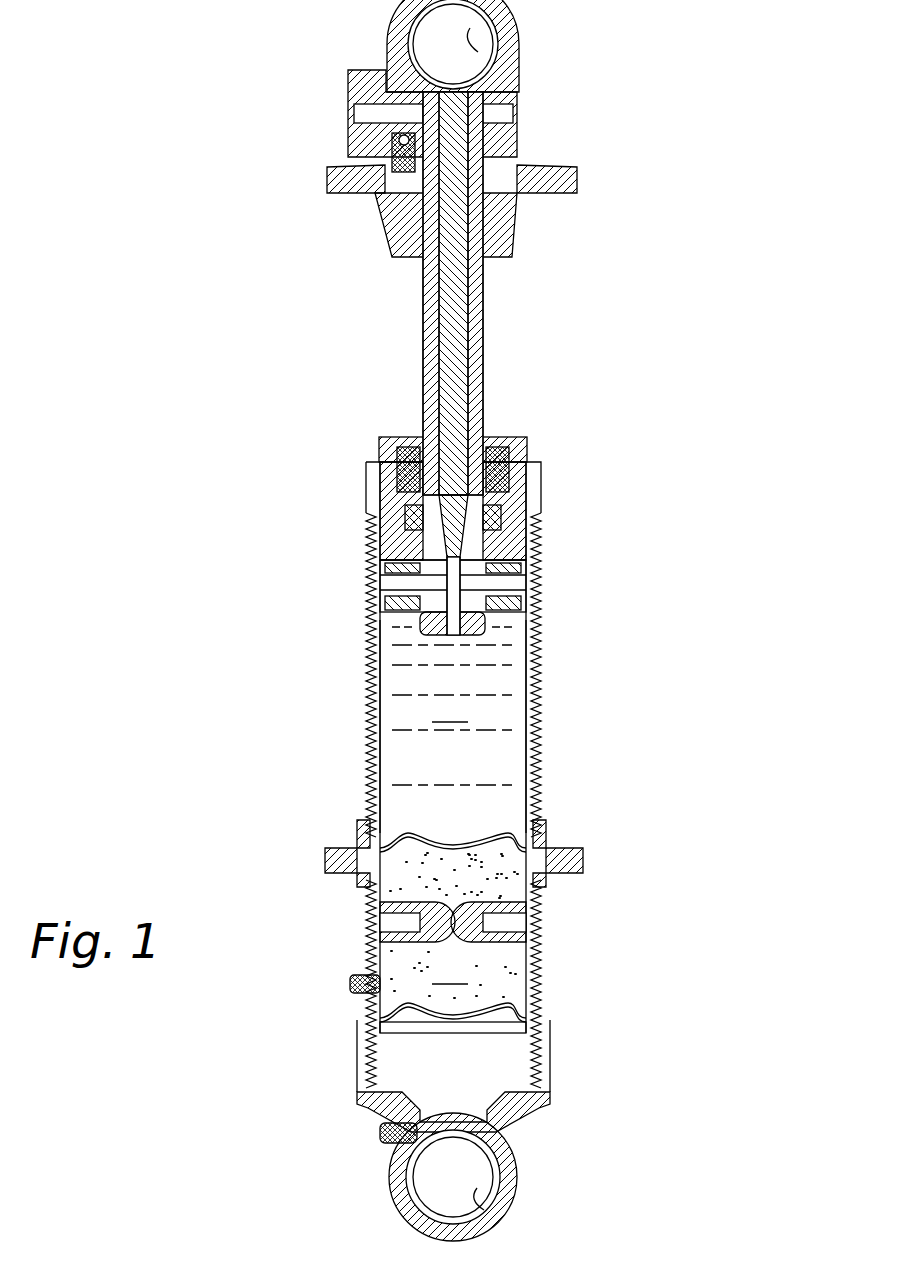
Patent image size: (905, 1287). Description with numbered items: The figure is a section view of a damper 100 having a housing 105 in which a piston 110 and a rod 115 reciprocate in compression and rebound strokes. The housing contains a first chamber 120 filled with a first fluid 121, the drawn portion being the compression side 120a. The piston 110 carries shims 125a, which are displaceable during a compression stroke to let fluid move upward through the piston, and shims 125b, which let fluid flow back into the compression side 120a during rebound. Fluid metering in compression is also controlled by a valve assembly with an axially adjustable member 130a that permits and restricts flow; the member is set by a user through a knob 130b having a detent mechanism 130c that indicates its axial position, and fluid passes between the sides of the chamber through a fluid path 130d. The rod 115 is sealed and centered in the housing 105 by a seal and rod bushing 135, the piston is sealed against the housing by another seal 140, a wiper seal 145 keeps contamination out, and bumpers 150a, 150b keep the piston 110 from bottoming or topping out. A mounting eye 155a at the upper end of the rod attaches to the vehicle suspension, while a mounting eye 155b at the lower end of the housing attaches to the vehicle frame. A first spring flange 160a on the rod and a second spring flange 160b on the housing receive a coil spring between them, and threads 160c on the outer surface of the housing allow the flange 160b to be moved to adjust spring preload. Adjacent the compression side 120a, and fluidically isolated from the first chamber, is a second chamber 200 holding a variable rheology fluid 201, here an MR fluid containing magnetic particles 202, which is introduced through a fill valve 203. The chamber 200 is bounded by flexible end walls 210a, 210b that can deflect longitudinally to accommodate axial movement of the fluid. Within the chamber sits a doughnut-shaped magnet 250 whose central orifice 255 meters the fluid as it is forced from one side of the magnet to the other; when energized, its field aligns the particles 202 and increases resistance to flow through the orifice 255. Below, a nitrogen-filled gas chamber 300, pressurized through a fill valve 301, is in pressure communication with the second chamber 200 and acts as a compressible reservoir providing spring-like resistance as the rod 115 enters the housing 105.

The damper 100 is at (132, 532).
The housing 105 is at (540, 642).
The piston 110 is at (382, 590).
The rod 115 is at (485, 322).
The first chamber 120 is at (390, 745).
The compression side 120a is at (505, 748).
The first fluid 121 is at (510, 808).
The shims 125a is at (530, 568).
The shims 125b is at (535, 615).
The axially adjustable member 130a is at (452, 330).
The knob 130b is at (348, 92).
The detent mechanism 130c is at (390, 150).
The fluid path 130d is at (515, 478).
The seal and rod bushing 135 is at (372, 512).
The seal 140 is at (530, 590).
The wiper seal 145 is at (527, 443).
The bumper 150a is at (390, 235).
The bumper 150b is at (525, 510).
The mounting eye 155a is at (470, 28).
The mounting eye 155b is at (477, 1188).
The first spring flange 160a is at (565, 188).
The second spring flange 160b is at (583, 860).
The threads 160c is at (540, 672).
The second chamber 200 is at (400, 890).
The variable rheology fluid 201 is at (453, 974).
The particles 202 is at (497, 977).
The fill valve 203 is at (350, 983).
The flexible end wall 210a is at (413, 833).
The flexible end wall 210b is at (430, 1024).
The magnet 250 is at (480, 928).
The orifice 255 is at (450, 920).
The gas chamber 300 is at (505, 1062).
The fill valve 301 is at (382, 1133).